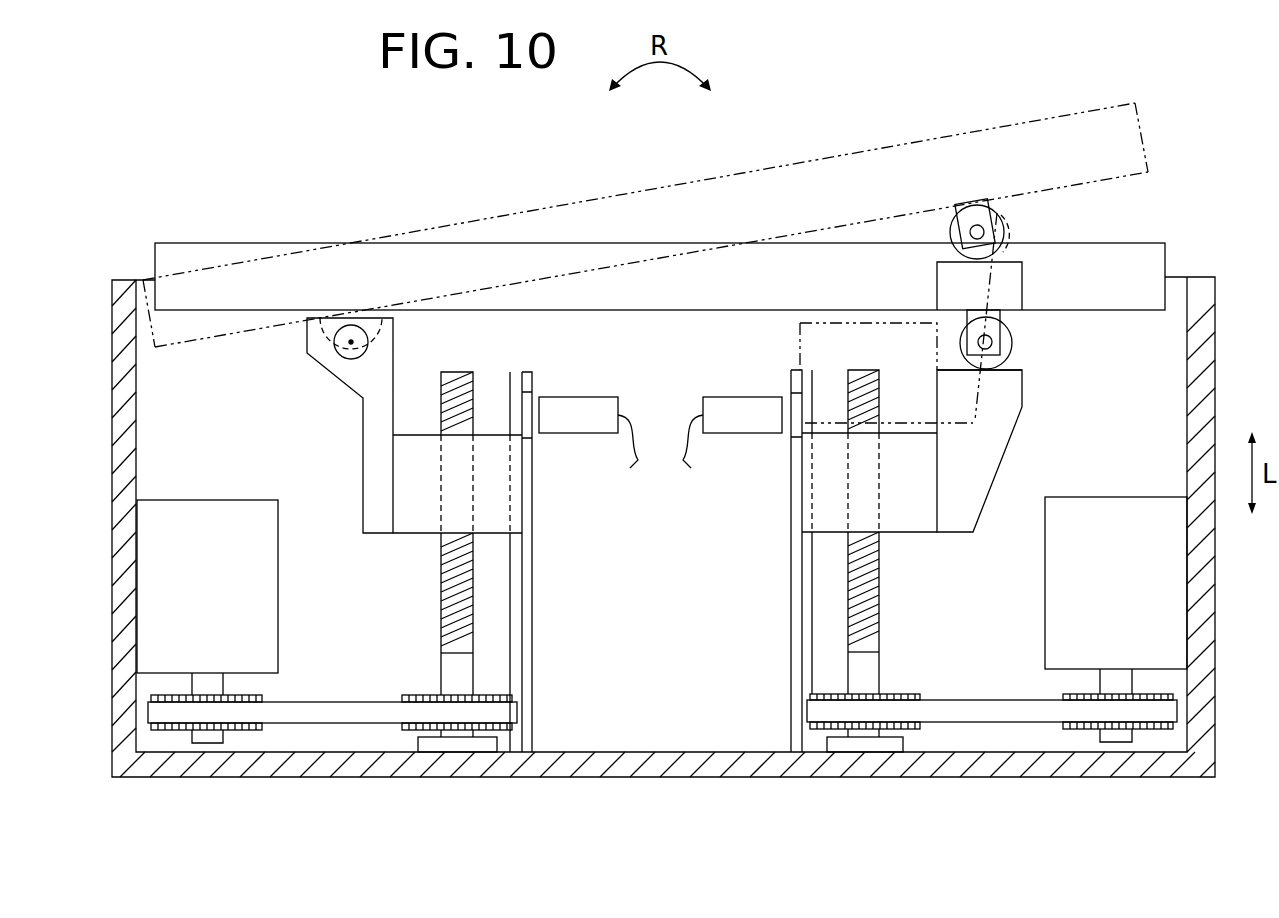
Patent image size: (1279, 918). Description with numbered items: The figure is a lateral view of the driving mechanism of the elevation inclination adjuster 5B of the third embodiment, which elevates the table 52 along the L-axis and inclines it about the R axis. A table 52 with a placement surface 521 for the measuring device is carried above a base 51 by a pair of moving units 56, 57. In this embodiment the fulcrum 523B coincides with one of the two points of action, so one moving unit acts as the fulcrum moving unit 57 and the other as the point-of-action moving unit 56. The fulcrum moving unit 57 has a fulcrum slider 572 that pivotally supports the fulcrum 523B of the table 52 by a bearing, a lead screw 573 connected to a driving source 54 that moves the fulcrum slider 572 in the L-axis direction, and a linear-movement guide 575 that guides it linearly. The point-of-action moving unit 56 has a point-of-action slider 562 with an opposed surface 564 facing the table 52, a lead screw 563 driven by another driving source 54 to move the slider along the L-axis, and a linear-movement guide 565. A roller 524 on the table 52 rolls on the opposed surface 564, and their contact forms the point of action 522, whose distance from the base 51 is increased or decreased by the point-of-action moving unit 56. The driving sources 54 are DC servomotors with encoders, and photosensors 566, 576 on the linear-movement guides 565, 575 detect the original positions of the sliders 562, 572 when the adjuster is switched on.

The elevation inclination adjuster 5B is at (190, 128).
The base 51 is at (652, 770).
The table 52 is at (291, 270).
The placement surface 521 is at (552, 200).
The fulcrum 523B is at (351, 342).
The roller 524 is at (1013, 343).
The point of action 522 is at (995, 383).
The driving source 54 is at (172, 512).
The point-of-action moving unit 56 is at (880, 800).
The fulcrum moving unit 57 is at (462, 800).
The point-of-action slider 562 is at (995, 455).
The lead screw 563 is at (880, 597).
The opposed surface 564 is at (957, 372).
The linear-movement guide 565 is at (791, 593).
The photosensor 566 is at (745, 397).
The fulcrum slider 572 is at (372, 440).
The lead screw 573 is at (440, 597).
The linear-movement guide 575 is at (533, 590).
The photosensor 576 is at (575, 397).